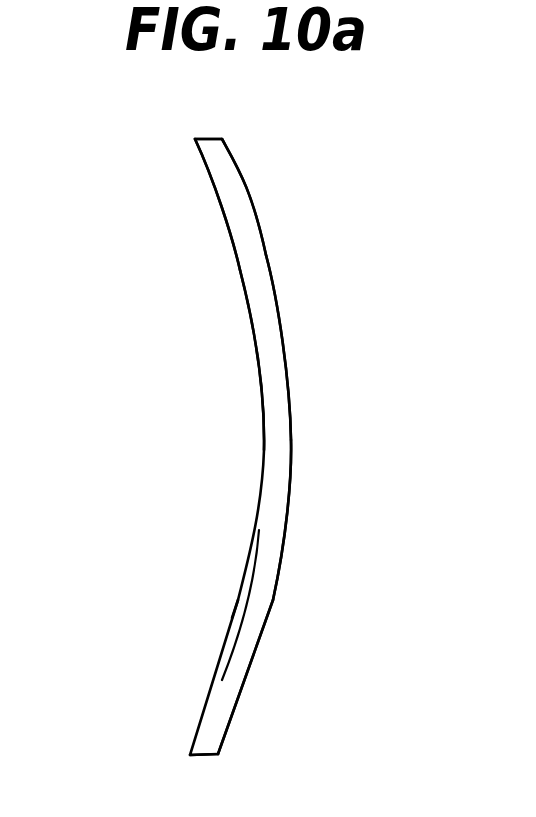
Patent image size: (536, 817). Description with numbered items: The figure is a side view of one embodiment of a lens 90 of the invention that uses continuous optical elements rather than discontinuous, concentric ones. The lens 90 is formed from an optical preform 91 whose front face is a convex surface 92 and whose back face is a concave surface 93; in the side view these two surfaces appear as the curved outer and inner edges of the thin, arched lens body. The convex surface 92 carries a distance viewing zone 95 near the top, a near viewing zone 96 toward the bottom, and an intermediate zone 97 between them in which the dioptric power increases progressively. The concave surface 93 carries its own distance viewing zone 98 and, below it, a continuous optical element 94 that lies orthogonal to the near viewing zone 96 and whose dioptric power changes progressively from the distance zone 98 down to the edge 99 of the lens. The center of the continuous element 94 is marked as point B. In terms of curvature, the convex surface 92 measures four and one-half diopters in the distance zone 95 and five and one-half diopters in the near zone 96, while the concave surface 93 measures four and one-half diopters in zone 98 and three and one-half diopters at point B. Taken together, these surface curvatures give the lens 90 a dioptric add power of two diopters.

The lens 90 is at (288, 165).
The optical preform 91 is at (206, 138).
The convex surface 92 is at (256, 211).
The concave surface 93 is at (228, 224).
The continuous optical element 94 is at (243, 583).
The distance viewing zone of convex surface 95 is at (280, 313).
The near viewing zone 96 is at (272, 612).
The intermediate zone 97 is at (290, 427).
The distance viewing zone of concave surface 98 is at (252, 318).
The edge 99 is at (193, 747).
The point B is at (240, 604).